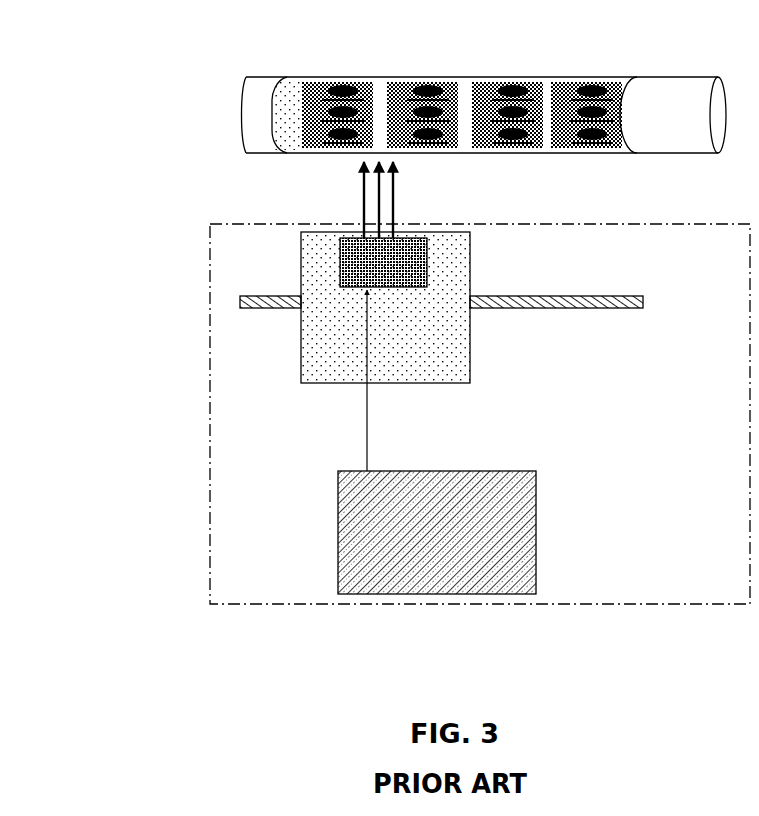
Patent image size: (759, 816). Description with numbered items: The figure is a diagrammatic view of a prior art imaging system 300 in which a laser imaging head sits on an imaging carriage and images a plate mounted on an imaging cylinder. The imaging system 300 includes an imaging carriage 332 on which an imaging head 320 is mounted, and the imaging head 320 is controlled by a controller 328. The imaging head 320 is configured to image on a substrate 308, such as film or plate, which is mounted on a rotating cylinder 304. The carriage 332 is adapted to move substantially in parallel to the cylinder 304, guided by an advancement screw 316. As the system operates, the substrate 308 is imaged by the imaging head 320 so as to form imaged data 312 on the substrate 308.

The imaging system 300 is at (200, 563).
The rotating cylinder 304 is at (660, 95).
The substrate 308 is at (610, 95).
The imaged data 312 is at (427, 110).
The advancement screw 316 is at (588, 296).
The imaging head 320 is at (355, 248).
The controller 328 is at (448, 575).
The imaging carriage 332 is at (325, 367).